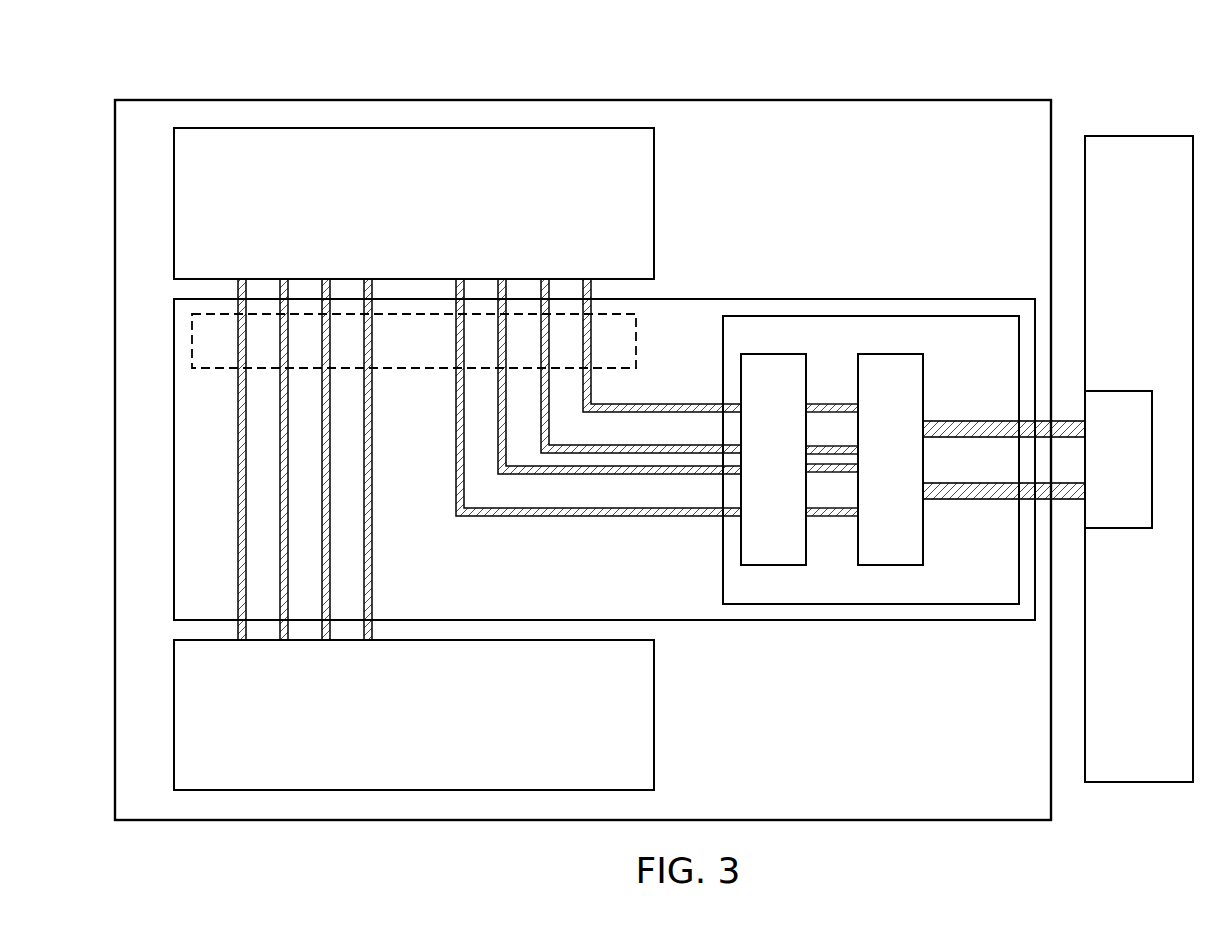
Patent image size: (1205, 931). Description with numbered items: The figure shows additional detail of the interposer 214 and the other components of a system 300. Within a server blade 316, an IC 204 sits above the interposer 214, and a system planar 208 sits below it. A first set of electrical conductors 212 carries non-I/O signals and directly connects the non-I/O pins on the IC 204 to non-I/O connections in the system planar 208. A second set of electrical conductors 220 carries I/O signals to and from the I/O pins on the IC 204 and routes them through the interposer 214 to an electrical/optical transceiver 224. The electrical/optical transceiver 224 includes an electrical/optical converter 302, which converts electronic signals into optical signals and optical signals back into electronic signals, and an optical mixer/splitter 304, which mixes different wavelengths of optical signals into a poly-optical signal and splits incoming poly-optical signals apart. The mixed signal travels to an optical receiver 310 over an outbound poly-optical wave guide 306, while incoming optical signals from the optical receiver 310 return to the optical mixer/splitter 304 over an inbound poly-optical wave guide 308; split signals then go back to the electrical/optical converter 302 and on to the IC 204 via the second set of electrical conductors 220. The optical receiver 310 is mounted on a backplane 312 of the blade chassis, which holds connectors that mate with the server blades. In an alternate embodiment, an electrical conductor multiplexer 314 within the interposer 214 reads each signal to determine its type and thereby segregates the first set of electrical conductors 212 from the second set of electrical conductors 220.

The system 300 is at (170, 73).
The server blade 316 is at (872, 199).
The IC 204 is at (399, 192).
The system planar 208 is at (389, 731).
The first set of electrical conductors 212 is at (382, 275).
The second set of electrical conductors 220 is at (448, 275).
The interposer 214 is at (522, 577).
The electrical/optical transceiver 224 is at (849, 596).
The electrical/optical converter 302 is at (751, 472).
The optical mixer/splitter 304 is at (869, 472).
The outbound poly-optical wave guide 306 is at (982, 420).
The inbound poly-optical wave guide 308 is at (969, 500).
The optical receiver 310 is at (1096, 474).
The backplane 312 is at (1116, 267).
The electrical conductor multiplexer 314 is at (423, 369).